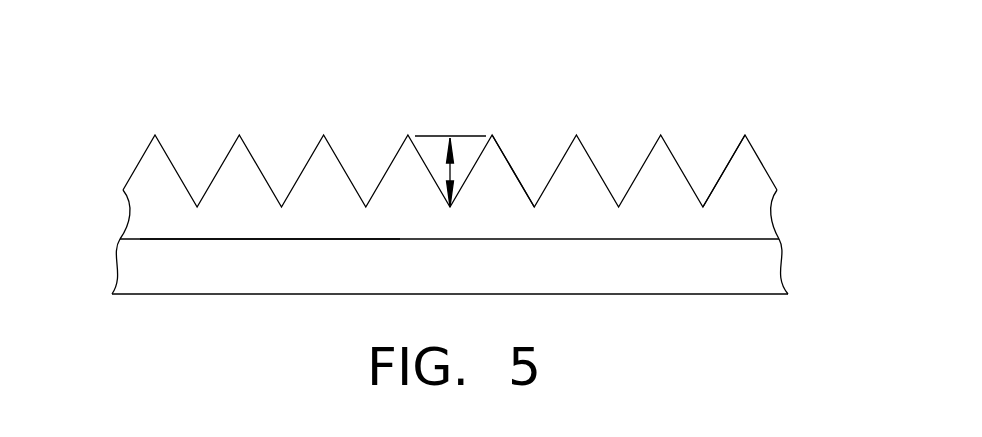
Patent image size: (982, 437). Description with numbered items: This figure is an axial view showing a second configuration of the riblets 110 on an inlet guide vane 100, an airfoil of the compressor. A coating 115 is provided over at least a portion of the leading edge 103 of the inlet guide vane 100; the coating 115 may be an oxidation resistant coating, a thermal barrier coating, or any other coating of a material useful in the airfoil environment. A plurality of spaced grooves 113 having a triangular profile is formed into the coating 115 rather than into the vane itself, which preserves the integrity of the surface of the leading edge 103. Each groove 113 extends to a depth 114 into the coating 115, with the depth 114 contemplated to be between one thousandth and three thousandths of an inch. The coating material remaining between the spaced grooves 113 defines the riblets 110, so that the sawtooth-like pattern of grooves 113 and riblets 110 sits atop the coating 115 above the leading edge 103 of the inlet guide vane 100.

The inlet guide vane 100 is at (648, 273).
The leading edge 103 is at (182, 238).
The riblet 110 is at (277, 136).
The groove 113 is at (533, 168).
The depth 114 is at (448, 173).
The coating 115 is at (743, 213).